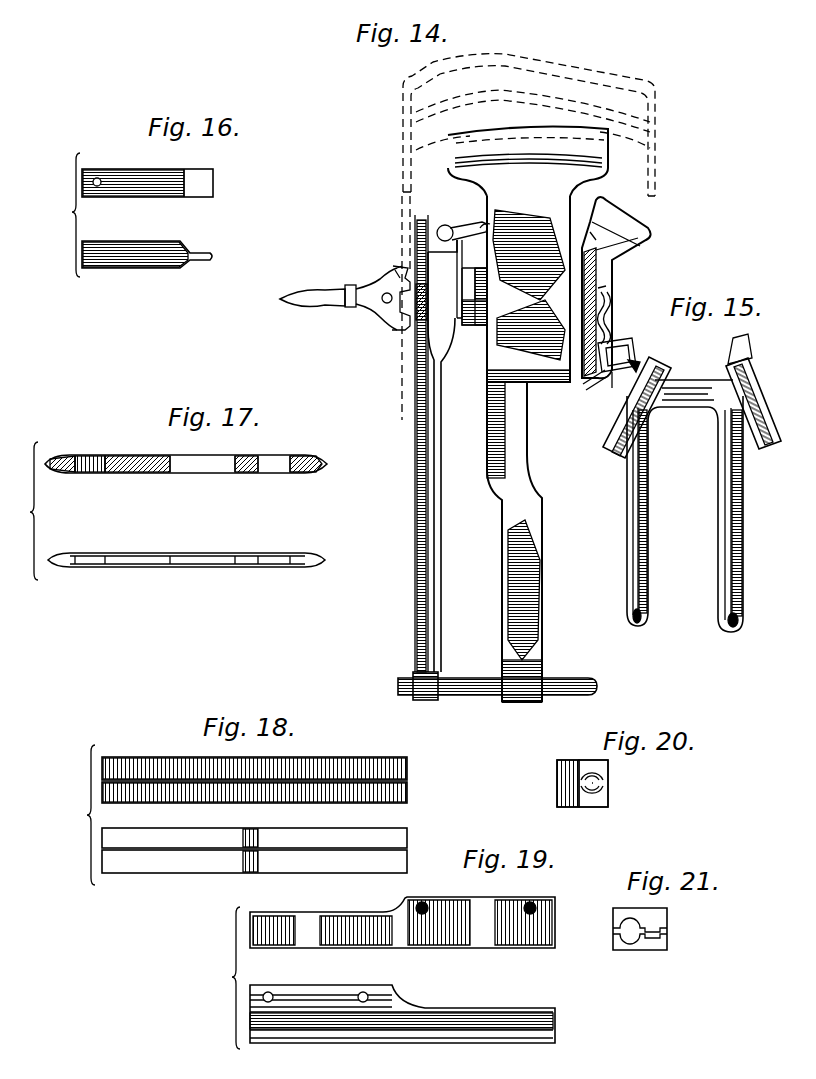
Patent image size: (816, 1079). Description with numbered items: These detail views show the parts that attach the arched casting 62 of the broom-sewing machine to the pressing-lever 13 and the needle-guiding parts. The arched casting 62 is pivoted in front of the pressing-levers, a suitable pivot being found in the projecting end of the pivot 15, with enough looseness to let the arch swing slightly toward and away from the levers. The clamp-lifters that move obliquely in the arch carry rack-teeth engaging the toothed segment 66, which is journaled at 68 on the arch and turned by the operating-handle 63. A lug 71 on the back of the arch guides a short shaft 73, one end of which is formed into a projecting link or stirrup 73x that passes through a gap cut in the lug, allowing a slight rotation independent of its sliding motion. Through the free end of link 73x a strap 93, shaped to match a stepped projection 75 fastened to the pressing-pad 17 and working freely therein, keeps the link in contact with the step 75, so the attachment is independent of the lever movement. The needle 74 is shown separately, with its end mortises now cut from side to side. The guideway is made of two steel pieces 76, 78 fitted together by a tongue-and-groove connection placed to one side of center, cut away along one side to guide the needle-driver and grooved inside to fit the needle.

In FIG. 14, the pressing-lever 13 is at (540, 609).
In FIG. 14, the pivot 15 is at (548, 680).
In FIG. 14, the pressing-pad 17 is at (622, 268).
In FIG. 14, the arched casting 62 is at (415, 517).
In FIG. 15, the arched casting 62 is at (652, 486).
In FIG. 14, the operating-handle 63 is at (314, 303).
In FIG. 14, the segment 66 is at (397, 275).
In FIG. 14, the journal 68 is at (385, 304).
In FIG. 14, the lug 71 is at (443, 250).
In FIG. 15, the lug 71 is at (632, 378).
In FIG. 14, the short shaft 73 is at (445, 226).
In FIG. 15, the short shaft 73 is at (613, 380).
In FIG. 14, the projecting link or stirrup 73x is at (482, 230).
In FIG. 15, the projecting link or stirrup 73x is at (624, 356).
In FIG. 17, the needle 74 is at (137, 470).
In FIG. 14, the stepped projection 75 is at (476, 312).
In FIG. 18, the guideway 76 is at (331, 799).
In FIG. 20, the guideway 76 is at (556, 793).
In FIG. 18, the guideway 78 is at (347, 763).
In FIG. 20, the guideway 78 is at (556, 768).
In FIG. 14, the strap 93 is at (457, 292).
In FIG. 15, the strap 93 is at (612, 305).